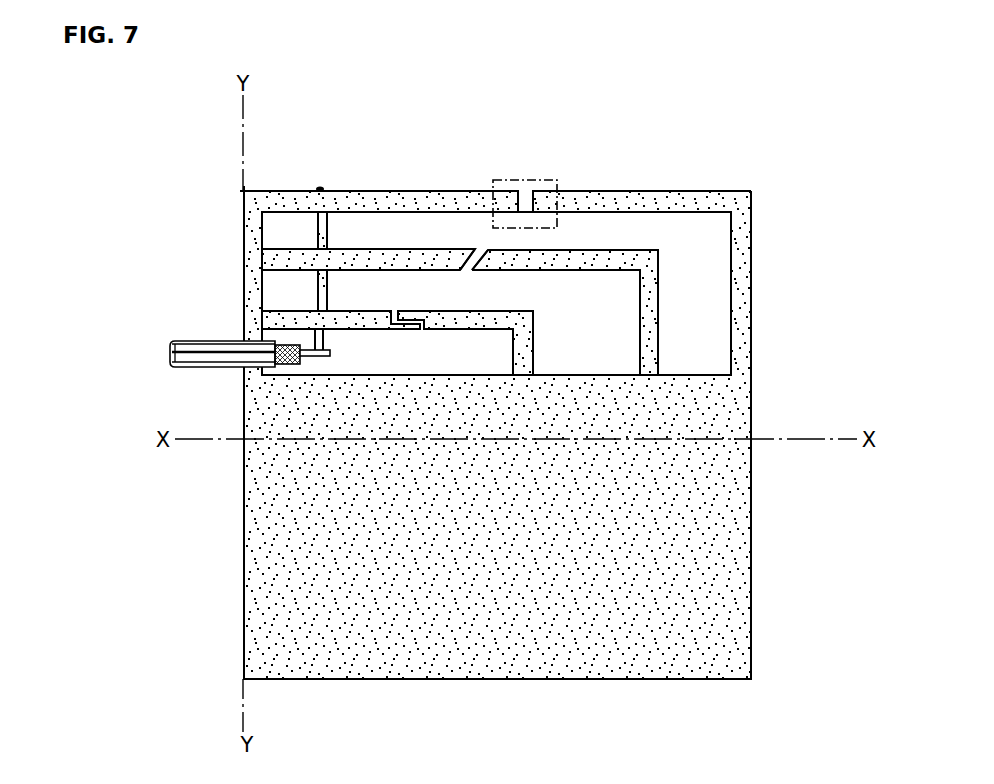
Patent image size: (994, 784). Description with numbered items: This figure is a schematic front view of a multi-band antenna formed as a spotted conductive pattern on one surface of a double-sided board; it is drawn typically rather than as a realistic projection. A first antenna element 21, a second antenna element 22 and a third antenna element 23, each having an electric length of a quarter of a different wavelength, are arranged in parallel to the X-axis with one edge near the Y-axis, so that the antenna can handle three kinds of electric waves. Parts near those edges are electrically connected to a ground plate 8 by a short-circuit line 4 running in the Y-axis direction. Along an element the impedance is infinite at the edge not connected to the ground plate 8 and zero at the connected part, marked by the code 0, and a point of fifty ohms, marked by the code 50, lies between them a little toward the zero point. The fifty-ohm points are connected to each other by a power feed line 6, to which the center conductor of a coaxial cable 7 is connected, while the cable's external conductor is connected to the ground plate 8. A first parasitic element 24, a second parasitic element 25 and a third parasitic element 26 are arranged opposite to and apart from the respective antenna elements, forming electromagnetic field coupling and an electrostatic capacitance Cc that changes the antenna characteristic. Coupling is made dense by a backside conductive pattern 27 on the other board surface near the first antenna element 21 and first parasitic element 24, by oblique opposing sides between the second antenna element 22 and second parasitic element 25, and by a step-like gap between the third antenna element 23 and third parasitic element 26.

The short-circuit line 4 is at (262, 238).
The power feed line 6 is at (277, 293).
The coaxial cable 7 is at (194, 342).
The ground plate 8 is at (753, 559).
The first antenna element 21 is at (413, 192).
The second antenna element 22 is at (378, 250).
The third antenna element 23 is at (340, 308).
The first parasitic element 24 is at (682, 212).
The second parasitic element 25 is at (578, 272).
The third parasitic element 26 is at (463, 330).
The backside conductive pattern 27 is at (528, 207).
The electrostatic capacitance Cc is at (528, 205).
The zero impedance point 0 is at (244, 190).
The fifty-ohm impedance point 50 is at (320, 186).